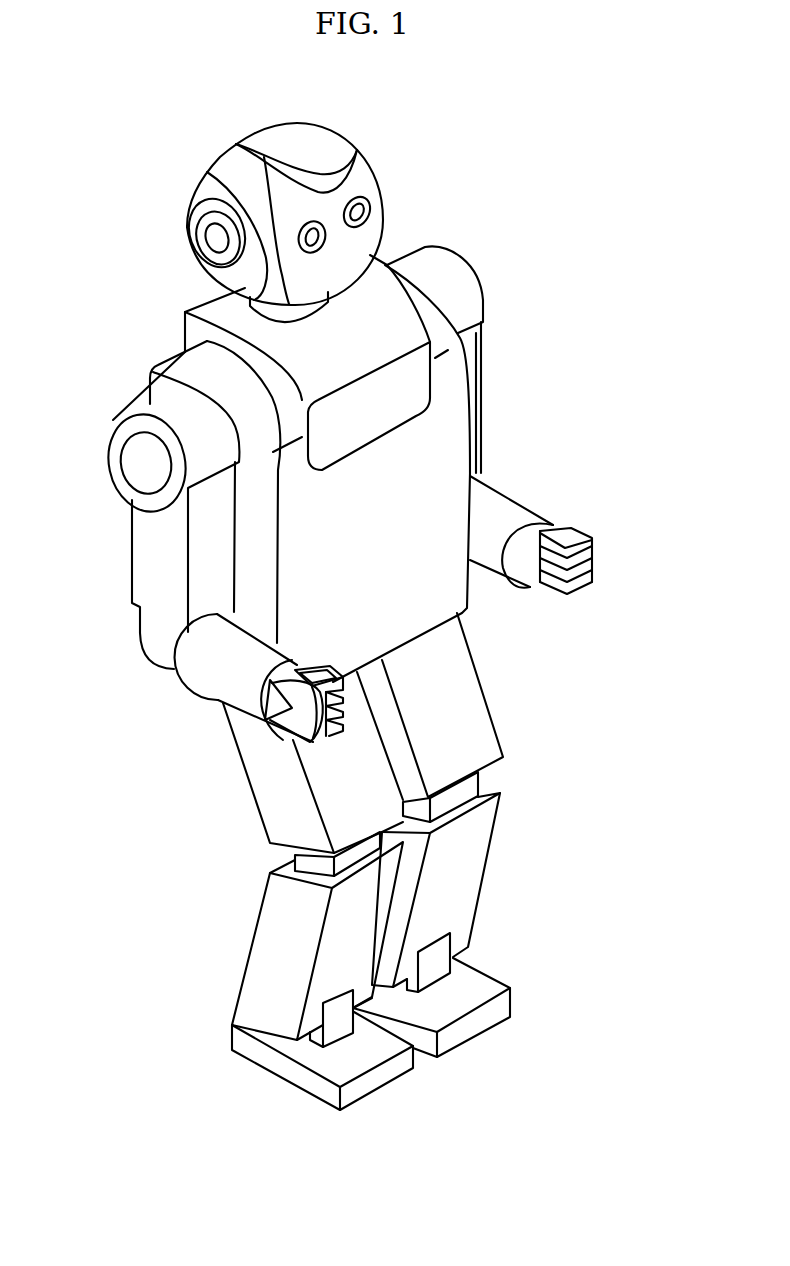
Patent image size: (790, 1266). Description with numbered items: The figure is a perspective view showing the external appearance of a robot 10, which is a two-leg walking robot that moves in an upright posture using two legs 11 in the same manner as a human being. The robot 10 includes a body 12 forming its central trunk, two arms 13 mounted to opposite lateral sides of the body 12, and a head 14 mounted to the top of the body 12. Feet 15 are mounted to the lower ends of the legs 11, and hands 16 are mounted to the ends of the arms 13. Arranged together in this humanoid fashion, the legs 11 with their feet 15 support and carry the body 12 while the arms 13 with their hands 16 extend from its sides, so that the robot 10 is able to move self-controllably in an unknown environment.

The robot 10 is at (572, 124).
The legs 11 is at (483, 840).
The body 12 is at (455, 410).
The arms 13 is at (513, 507).
The head 14 is at (381, 198).
The feet 15 is at (503, 1002).
The hands 16 is at (592, 560).